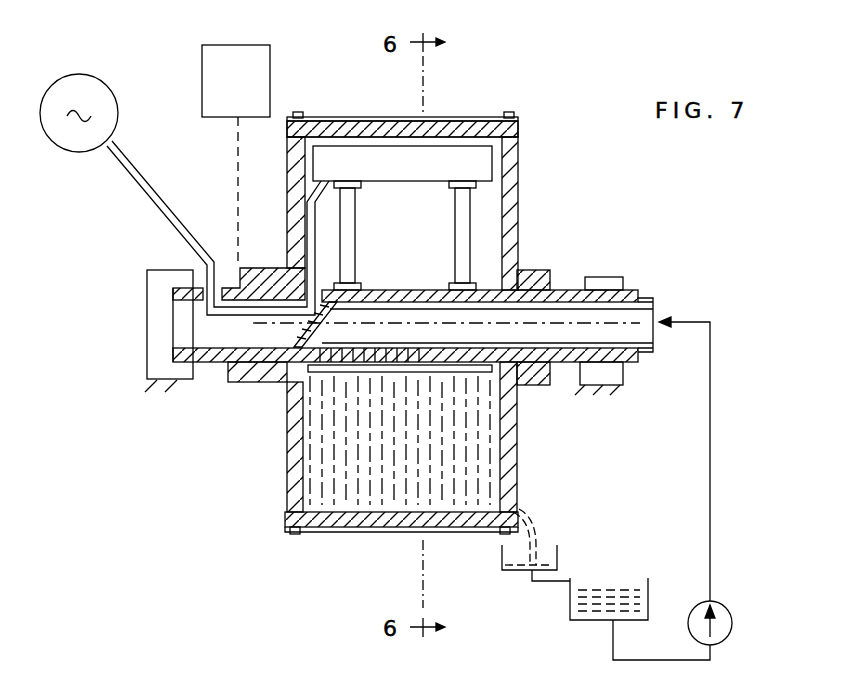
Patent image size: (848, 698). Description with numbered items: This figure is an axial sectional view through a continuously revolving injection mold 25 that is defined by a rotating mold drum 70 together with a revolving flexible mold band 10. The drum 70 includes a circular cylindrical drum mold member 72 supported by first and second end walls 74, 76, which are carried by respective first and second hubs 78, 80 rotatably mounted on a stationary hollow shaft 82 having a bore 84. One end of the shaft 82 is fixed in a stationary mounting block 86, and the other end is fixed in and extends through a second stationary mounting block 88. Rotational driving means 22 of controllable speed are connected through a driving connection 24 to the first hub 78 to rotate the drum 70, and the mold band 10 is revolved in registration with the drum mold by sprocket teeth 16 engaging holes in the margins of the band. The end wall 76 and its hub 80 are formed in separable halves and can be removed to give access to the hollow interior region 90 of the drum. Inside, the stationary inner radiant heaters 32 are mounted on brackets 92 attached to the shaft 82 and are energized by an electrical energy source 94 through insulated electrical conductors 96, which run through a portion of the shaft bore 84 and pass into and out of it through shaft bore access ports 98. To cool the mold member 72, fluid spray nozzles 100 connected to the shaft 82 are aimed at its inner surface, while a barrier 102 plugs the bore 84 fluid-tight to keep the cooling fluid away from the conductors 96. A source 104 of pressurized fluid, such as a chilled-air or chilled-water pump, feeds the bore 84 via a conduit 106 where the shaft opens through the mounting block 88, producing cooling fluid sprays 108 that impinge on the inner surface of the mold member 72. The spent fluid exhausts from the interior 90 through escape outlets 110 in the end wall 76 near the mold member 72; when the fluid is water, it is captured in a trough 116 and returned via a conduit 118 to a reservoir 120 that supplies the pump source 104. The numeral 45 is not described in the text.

The flexible mold band 10 is at (431, 114).
The sprocket teeth 16 is at (300, 112).
The rotational driving means 22 is at (248, 45).
The driving connection 24 is at (233, 170).
The continuously revolving injection mold 25 is at (534, 108).
The inner radiant heaters 32 is at (432, 171).
The shaft 45 is at (553, 338).
The rotating mold drum 70 is at (528, 458).
The circular cylindrical drum mold member 72 is at (382, 118).
The first end wall 74 is at (290, 470).
The second end wall 76 is at (517, 183).
The first hub 78 is at (260, 386).
The second hub 80 is at (545, 272).
The stationary hollow shaft 82 is at (572, 288).
The bore 84 is at (420, 312).
The first stationary mounting block 86 is at (157, 303).
The second stationary mounting block 88 is at (622, 278).
The hollow interior region 90 is at (490, 240).
The brackets 92 is at (456, 222).
The electrical energy source 94 is at (143, 99).
The insulated electrical conductors 96 is at (148, 190).
The shaft bore access ports 98 is at (190, 312).
The fluid spray nozzles 100 is at (424, 342).
The barrier 102 is at (322, 318).
The source of pressurized fluid 104 is at (732, 625).
The conduit 106 is at (714, 456).
The cooling fluid sprays 108 is at (325, 482).
The escape outlets 110 is at (517, 134).
The trough 116 is at (502, 552).
The conduit 118 is at (535, 580).
The reservoir 120 is at (578, 622).